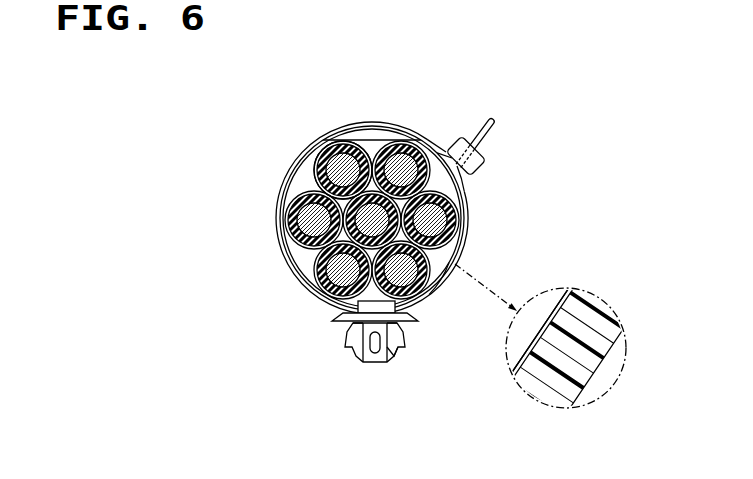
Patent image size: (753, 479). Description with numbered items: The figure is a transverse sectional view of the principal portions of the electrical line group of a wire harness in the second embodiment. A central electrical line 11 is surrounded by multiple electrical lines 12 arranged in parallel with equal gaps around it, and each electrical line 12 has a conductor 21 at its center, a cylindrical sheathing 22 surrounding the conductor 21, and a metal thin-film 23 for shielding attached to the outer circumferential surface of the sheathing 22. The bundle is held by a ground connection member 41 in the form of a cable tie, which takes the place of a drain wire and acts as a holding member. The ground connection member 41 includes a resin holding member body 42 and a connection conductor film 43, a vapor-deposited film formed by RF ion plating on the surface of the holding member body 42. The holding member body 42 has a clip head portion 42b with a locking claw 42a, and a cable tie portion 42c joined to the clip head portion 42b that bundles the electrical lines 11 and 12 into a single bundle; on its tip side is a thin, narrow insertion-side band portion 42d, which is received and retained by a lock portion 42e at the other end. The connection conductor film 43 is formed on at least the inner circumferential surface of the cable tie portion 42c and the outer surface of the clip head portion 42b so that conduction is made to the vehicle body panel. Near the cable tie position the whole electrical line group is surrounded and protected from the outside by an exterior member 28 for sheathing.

The electrical line 11 is at (313, 185).
The electrical lines 12 is at (343, 141).
The conductor 21 is at (329, 303).
The sheathing 22 is at (468, 238).
The metal thin-film 23 is at (463, 181).
The exterior member 28 is at (303, 158).
The ground connection member 41 is at (342, 365).
The holding member body 42 is at (373, 133).
The locking claw 42a is at (397, 352).
The clip head portion 42b is at (417, 316).
The cable tie portion 42c is at (439, 274).
The insertion-side band portion 42d is at (485, 126).
The lock portion 42e is at (488, 159).
The connection conductor film 43 is at (555, 300).